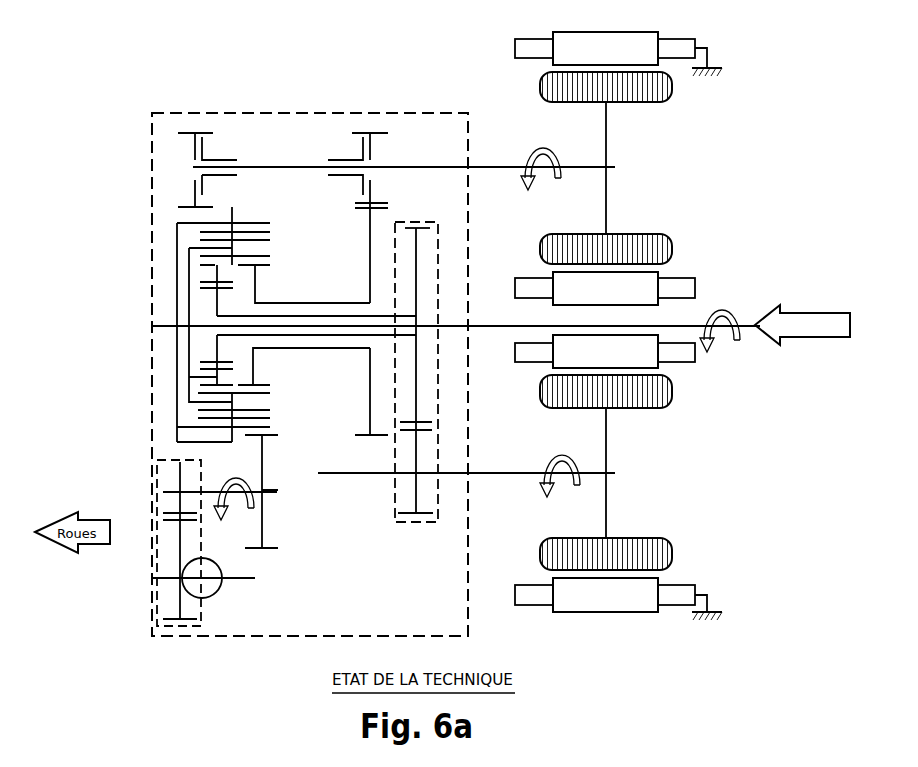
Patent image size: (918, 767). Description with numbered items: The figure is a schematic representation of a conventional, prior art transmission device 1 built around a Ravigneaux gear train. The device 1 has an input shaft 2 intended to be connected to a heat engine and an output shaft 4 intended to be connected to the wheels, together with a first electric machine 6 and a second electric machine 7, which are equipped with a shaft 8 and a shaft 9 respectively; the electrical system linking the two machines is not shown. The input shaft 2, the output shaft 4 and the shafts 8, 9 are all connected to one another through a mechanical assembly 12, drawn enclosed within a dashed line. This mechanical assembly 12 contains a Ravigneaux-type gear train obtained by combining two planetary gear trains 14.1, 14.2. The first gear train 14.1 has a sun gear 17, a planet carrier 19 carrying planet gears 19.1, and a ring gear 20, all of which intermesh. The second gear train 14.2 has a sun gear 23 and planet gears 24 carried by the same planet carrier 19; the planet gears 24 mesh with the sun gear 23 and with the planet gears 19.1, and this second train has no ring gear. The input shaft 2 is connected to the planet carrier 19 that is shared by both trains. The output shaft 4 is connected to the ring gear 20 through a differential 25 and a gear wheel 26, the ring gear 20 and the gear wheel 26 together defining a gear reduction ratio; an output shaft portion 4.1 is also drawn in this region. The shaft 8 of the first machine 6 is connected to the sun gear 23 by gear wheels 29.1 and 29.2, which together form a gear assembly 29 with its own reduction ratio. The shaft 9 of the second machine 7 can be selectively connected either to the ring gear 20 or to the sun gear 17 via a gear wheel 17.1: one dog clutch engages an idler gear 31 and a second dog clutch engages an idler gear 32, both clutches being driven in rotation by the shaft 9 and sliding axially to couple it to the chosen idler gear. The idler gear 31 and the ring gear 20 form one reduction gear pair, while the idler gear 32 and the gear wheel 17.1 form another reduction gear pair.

The transmission device 1 is at (269, 348).
The input shaft 2 is at (738, 345).
The output shaft 4 is at (167, 582).
The arbre de sortie 4.1 is at (235, 495).
The first electric machine 6 is at (484, 473).
The second electric machine 7 is at (427, 163).
The shaft 8 is at (598, 475).
The shaft 9 is at (588, 170).
The mechanical assembly 12 is at (152, 198).
The planetary gear train 14.1 is at (316, 335).
The planetary gear train 14.2 is at (422, 327).
The sun gear 17 is at (253, 362).
The gear wheel 17.1 is at (370, 390).
The planet carrier 19 is at (177, 363).
The planet gears 19.1 is at (232, 256).
The ring gear 20 is at (256, 223).
The sun gear 23 is at (217, 305).
The planet gears 24 is at (217, 268).
The differential 25 is at (202, 608).
The gear wheel 26 is at (262, 532).
The gear assembly 29 is at (395, 490).
The gear wheel 29.1 is at (417, 445).
The gear wheel 29.2 is at (417, 243).
The idler gear 31 is at (195, 143).
The idler gear 32 is at (375, 140).